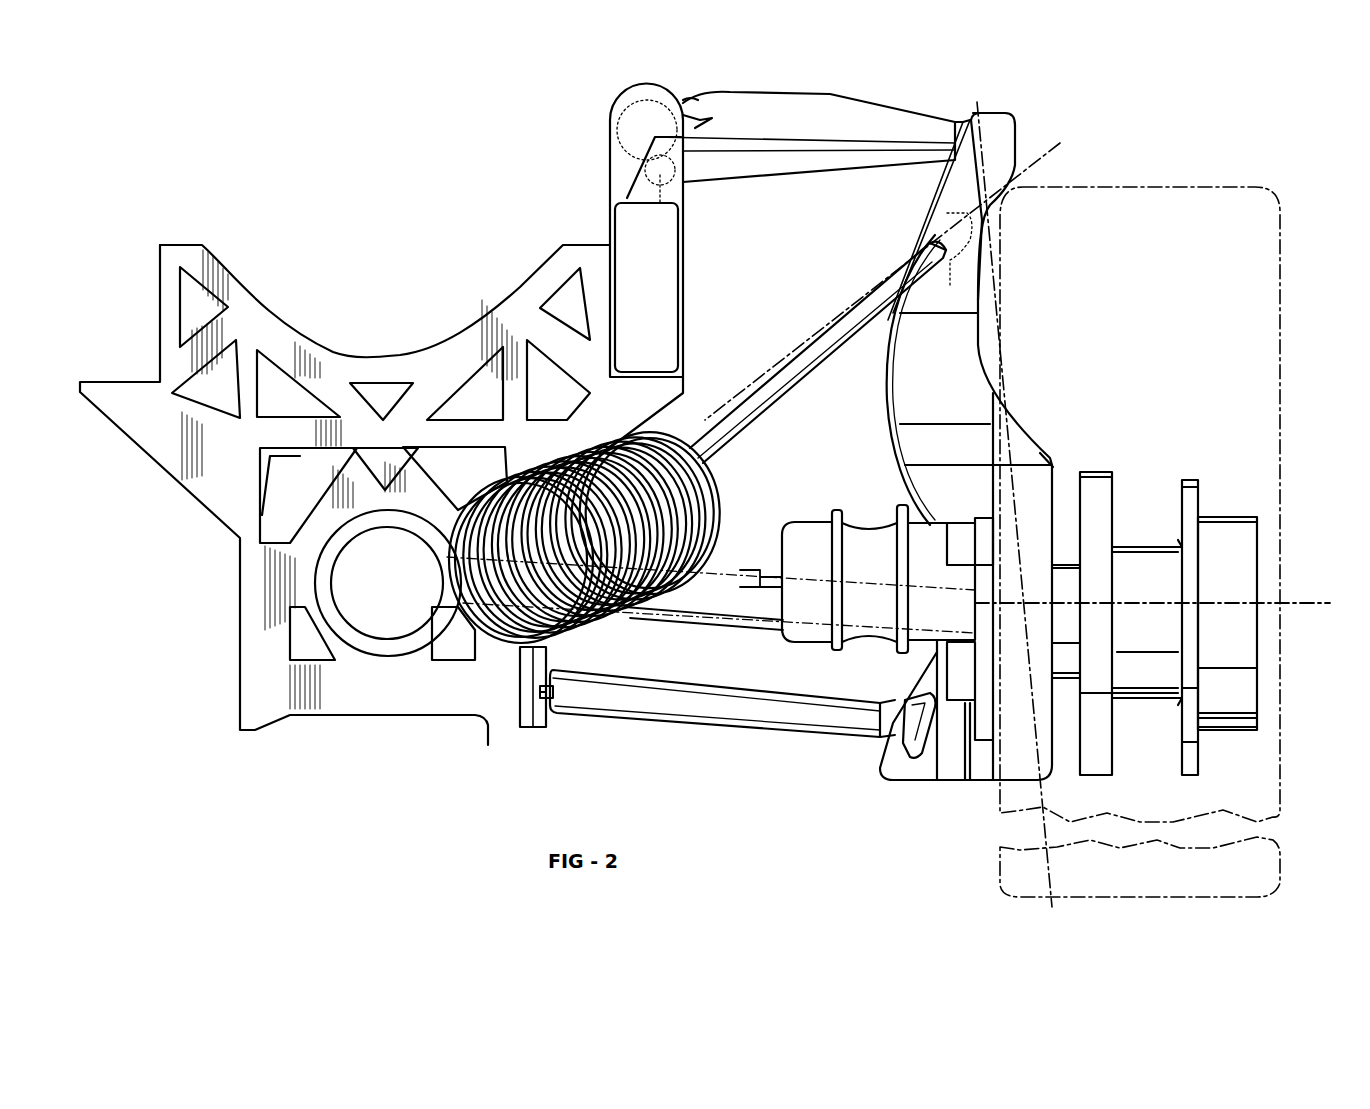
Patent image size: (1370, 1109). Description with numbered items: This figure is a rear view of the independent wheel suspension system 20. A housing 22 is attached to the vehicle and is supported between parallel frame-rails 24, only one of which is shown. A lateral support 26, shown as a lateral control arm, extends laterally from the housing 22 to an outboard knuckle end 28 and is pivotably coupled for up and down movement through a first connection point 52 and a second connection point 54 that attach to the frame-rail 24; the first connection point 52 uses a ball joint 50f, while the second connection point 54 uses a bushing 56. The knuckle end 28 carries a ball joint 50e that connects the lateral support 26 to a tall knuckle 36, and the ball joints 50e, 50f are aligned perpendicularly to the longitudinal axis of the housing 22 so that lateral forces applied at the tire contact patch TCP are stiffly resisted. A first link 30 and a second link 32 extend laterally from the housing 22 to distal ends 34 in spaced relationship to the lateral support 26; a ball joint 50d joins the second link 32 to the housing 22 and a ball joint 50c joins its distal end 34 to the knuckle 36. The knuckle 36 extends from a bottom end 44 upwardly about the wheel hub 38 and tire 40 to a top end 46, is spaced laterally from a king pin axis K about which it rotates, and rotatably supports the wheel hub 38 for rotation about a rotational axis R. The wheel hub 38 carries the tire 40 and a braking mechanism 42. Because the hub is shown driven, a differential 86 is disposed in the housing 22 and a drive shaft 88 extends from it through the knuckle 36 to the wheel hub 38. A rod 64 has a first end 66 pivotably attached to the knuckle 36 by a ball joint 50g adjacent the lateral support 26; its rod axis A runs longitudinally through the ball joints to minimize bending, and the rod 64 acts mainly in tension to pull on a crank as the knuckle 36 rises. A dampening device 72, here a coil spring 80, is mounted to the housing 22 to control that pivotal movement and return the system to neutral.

The independent wheel suspension system 20 is at (1268, 143).
The housing 22 is at (340, 714).
The frame-rail 24 is at (606, 232).
The lateral support 26 is at (835, 94).
The knuckle end 28 is at (928, 117).
The first link 30 is at (572, 660).
The second link 32 is at (640, 715).
The distal end 34 is at (873, 713).
The knuckle 36 is at (1013, 140).
The wheel hub 38 is at (1218, 517).
The tire 40 is at (1281, 283).
The braking mechanism 42 is at (835, 520).
The bottom end 44 is at (950, 782).
The top end 46 is at (985, 112).
The ball joint 50c is at (905, 740).
The ball joint 50d is at (543, 700).
The ball joint 50e is at (958, 122).
The ball joint 50f is at (660, 185).
The ball joint 50g is at (951, 256).
The first connection point 52 is at (708, 165).
The second connection point 54 is at (668, 97).
The bushing 56 is at (620, 105).
The rod 64 is at (797, 332).
The first end 66 is at (907, 250).
The dampening device 72 is at (707, 567).
The coil spring 80 is at (645, 612).
The differential 86 is at (345, 570).
The drive shaft 88 is at (735, 630).
The rod axis A is at (1045, 162).
The king pin axis K is at (955, 180).
The rotational axis R is at (1300, 603).
The tire contact patch TCP is at (1277, 853).